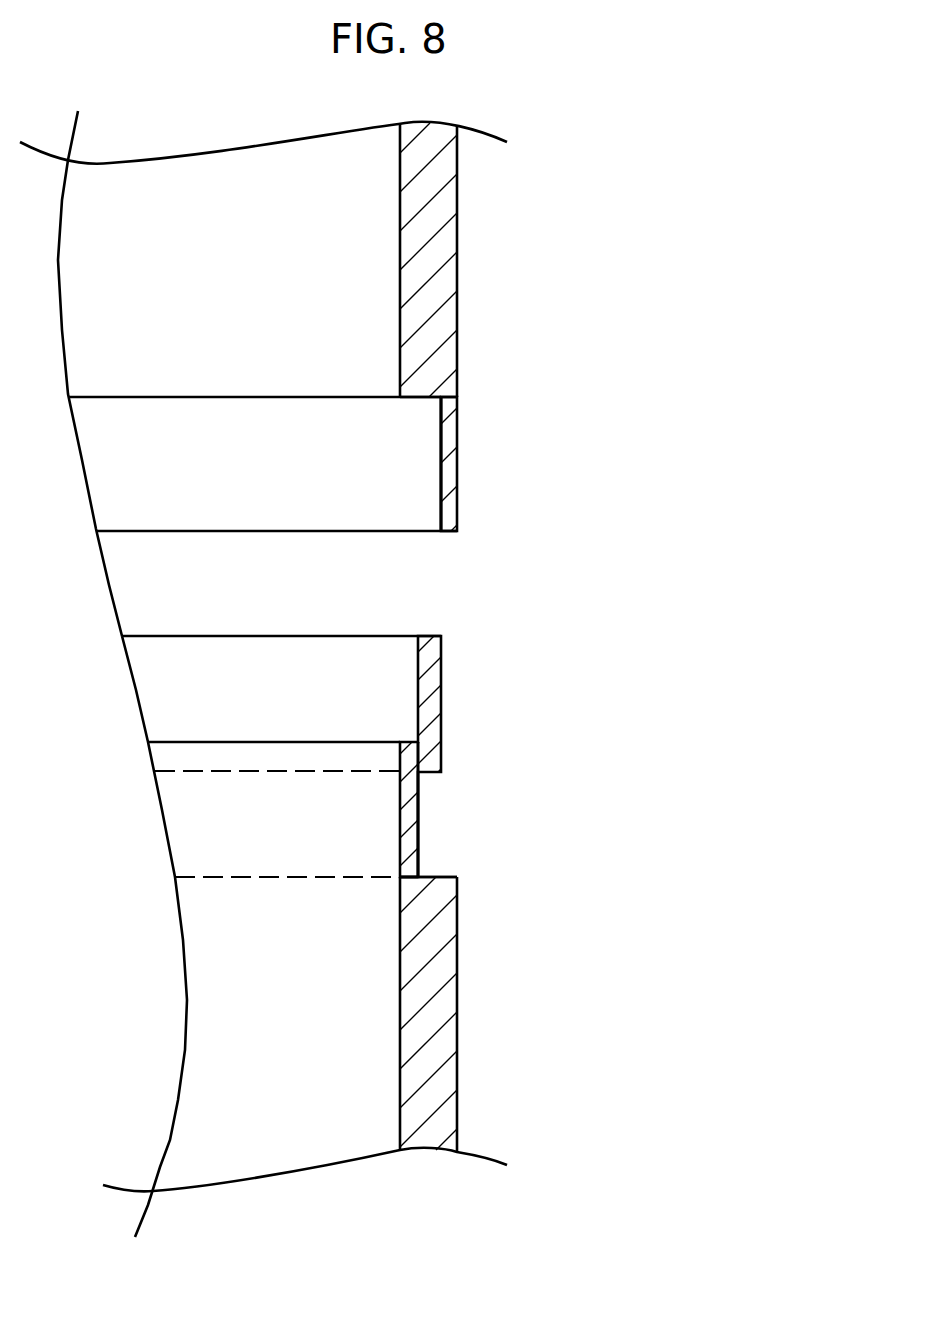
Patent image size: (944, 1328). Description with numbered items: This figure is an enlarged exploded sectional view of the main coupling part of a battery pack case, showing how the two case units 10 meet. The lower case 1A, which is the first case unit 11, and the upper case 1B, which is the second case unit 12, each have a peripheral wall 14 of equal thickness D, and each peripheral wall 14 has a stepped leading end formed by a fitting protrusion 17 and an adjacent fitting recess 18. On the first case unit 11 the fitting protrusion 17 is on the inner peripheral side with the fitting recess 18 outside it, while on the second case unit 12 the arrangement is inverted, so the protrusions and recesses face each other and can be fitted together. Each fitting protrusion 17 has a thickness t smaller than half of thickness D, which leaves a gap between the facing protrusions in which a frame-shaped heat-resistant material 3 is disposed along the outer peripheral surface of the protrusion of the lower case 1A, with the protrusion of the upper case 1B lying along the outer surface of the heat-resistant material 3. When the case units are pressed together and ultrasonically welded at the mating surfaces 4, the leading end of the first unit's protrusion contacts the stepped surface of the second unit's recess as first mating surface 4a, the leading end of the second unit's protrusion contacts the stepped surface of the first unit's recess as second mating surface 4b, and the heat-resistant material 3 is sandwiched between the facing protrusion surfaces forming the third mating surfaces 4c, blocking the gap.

The case unit 10 is at (397, 674).
The second case unit 12 is at (397, 373).
The upper case 1B is at (513, 187).
The first case unit 11 is at (439, 936).
The lower case 1A is at (520, 968).
The heat-resistant material 3 is at (453, 655).
The peripheral wall 14 is at (405, 288).
The mating surface 4 is at (577, 410).
The first mating surface 4a is at (410, 397).
The second mating surface 4b is at (450, 532).
The third mating surface 4c is at (440, 473).
The fitting protrusion 17 is at (447, 428).
The fitting recess 18 is at (430, 393).
The thickness of peripheral wall D is at (360, 245).
The thickness of fitting protrusion t is at (397, 495).